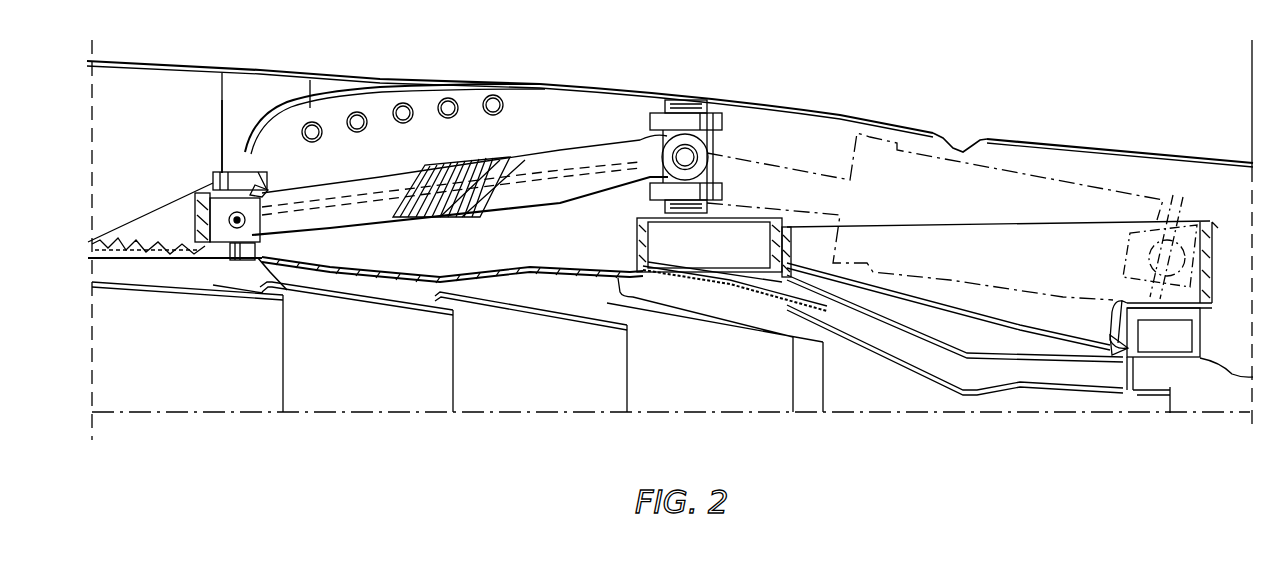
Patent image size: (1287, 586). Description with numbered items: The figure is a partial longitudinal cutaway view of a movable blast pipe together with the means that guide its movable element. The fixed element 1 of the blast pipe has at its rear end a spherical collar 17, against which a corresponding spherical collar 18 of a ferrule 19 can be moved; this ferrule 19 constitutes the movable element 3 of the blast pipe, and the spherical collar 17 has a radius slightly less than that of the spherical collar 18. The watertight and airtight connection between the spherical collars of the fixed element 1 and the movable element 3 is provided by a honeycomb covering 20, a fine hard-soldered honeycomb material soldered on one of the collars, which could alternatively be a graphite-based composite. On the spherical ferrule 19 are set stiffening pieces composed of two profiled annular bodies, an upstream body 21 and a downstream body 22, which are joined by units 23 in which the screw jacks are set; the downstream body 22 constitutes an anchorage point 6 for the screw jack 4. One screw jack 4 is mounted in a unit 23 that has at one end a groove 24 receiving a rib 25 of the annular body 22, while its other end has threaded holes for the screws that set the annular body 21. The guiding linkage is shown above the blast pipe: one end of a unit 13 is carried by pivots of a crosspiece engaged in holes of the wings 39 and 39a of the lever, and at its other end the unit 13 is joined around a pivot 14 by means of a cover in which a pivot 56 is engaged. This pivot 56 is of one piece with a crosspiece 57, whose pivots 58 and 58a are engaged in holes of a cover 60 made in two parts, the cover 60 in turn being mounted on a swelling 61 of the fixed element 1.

The fixed element 1 is at (390, 258).
The movable element 3 is at (990, 368).
The screw jack 4 is at (1063, 180).
The anchorage point 6 is at (1178, 200).
The unit 13 is at (487, 166).
The pivot 14 is at (243, 280).
The spherical collar 17 is at (520, 268).
The spherical collar 18 is at (755, 268).
The ferrule 19 is at (975, 350).
The honeycomb covering 20 is at (709, 270).
The upstream annular body 21 is at (655, 240).
The downstream annular body 22 is at (1202, 330).
The unit 23 is at (1013, 328).
The groove 24 is at (1115, 315).
The rib 25 is at (1127, 347).
The wing 39 is at (650, 121).
The wing 39a is at (650, 195).
The pivot 56 is at (220, 170).
The crosspiece 57 is at (253, 195).
The pivot 58 is at (225, 177).
The pivot 58a is at (280, 280).
The cover 60 is at (197, 195).
The swelling 61 is at (260, 245).